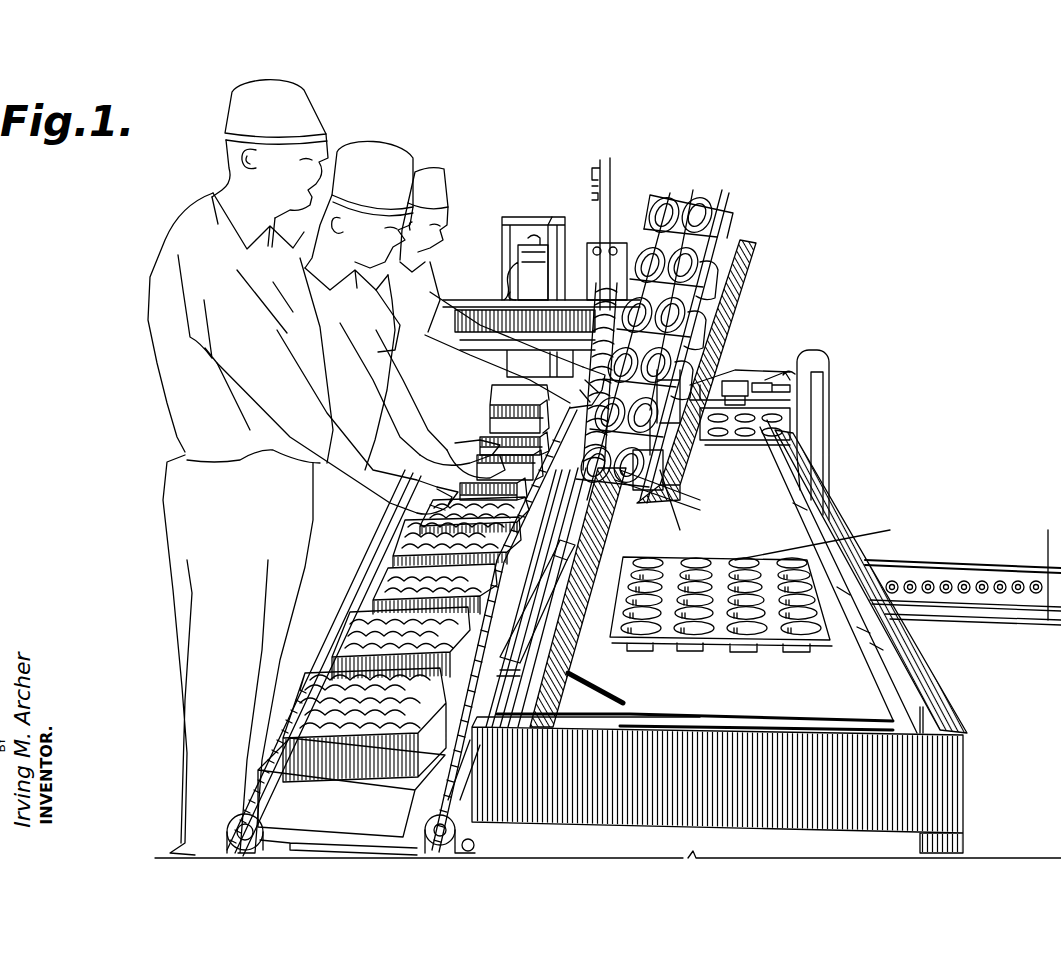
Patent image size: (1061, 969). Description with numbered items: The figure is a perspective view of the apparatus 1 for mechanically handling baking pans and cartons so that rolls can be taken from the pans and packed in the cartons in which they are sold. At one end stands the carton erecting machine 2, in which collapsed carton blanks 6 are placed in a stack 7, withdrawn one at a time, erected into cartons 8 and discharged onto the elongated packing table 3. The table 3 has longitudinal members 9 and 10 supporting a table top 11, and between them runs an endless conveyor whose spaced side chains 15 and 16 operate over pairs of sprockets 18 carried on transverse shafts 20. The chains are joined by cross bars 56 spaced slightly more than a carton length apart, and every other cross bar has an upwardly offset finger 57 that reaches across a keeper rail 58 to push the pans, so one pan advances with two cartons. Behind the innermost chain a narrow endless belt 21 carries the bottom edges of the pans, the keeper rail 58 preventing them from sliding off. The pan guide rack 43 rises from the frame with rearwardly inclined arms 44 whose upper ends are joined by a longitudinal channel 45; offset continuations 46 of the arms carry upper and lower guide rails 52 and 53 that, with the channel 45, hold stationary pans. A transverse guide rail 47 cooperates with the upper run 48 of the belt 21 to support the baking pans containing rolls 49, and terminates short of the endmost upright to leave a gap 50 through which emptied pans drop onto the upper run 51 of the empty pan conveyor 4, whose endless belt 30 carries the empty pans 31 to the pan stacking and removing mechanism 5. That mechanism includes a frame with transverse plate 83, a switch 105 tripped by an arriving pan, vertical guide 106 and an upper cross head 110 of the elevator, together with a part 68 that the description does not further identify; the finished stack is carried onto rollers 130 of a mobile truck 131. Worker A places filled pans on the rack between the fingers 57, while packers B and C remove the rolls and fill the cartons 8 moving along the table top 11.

The apparatus 1 is at (841, 508).
The carton erecting machine 2 is at (505, 220).
The packing table 3 is at (380, 572).
The empty pan conveyor 4 is at (897, 730).
The pan stacking and removing mechanism 5 is at (766, 384).
The collapsed carton blanks 6 is at (518, 254).
The stack 7 is at (550, 228).
The cartons 8 is at (488, 412).
The longitudinal member 9 is at (295, 688).
The longitudinal member 10 is at (475, 800).
The table top 11 is at (300, 798).
The side chain 15 is at (250, 803).
The side chain 16 is at (422, 806).
The sprockets 18 is at (236, 836).
The transverse shafts 20 is at (330, 850).
The endless belt 21 is at (535, 660).
The endless belt 30 is at (790, 545).
The empty pans 31 is at (728, 442).
The pan guide rack 43 is at (630, 492).
The arms 44 is at (612, 538).
The longitudinal channel 45 is at (660, 448).
The offset continuations 46 is at (745, 318).
The guide rail 47 is at (583, 395).
The upper run 48 is at (550, 610).
The baking pans containing rolls 49 is at (580, 355).
The opening or gap 50 is at (660, 482).
The upper run 51 is at (860, 650).
The upper longitudinal guide rail 52 is at (735, 238).
The lower longitudinal guide rail 53 is at (695, 390).
The cross bars 56 is at (530, 608).
The finger 57 is at (548, 560).
The keeper rail 58 is at (563, 675).
The post 68 is at (784, 400).
The transverse plate 83 is at (745, 380).
The switch 105 is at (745, 378).
The vertical guide 106 is at (606, 216).
The upper cross head 110 is at (622, 245).
The rollers 130 is at (966, 582).
The mobile truck 131 is at (925, 563).
The worker A is at (440, 190).
The worker B is at (383, 157).
The worker C is at (290, 115).